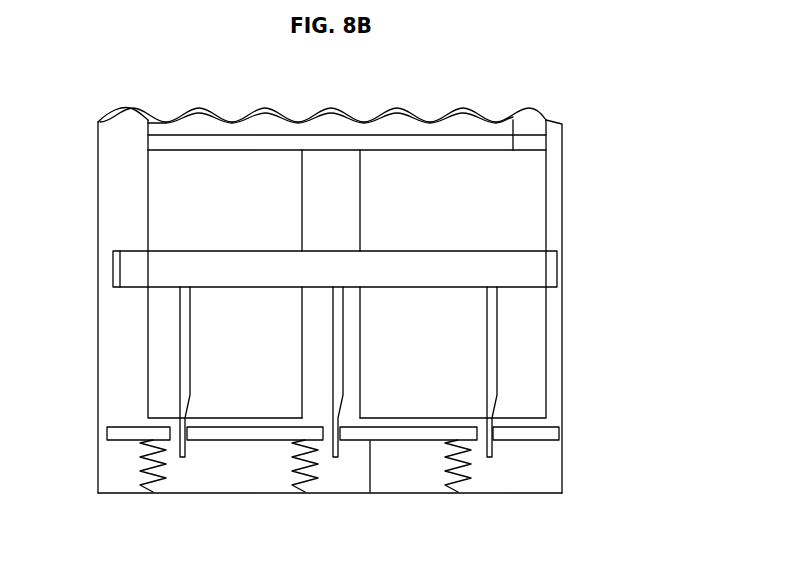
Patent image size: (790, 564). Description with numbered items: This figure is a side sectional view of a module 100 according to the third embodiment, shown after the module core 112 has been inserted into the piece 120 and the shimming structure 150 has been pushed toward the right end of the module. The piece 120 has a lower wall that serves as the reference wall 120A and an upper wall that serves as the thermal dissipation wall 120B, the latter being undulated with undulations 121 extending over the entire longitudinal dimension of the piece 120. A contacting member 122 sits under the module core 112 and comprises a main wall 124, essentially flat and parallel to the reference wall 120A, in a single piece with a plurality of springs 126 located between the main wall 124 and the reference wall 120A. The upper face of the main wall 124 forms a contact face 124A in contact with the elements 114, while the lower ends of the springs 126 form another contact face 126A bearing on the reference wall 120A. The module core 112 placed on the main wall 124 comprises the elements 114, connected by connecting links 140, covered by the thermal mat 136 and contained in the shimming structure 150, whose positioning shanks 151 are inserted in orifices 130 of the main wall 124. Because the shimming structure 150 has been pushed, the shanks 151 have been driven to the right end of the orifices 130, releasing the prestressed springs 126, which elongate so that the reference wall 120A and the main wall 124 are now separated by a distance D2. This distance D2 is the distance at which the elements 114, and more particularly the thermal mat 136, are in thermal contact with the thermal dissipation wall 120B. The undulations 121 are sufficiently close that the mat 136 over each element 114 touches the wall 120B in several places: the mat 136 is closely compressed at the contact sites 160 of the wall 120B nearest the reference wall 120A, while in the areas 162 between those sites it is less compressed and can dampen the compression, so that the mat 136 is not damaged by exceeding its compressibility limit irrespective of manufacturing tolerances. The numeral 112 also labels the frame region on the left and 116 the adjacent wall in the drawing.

The module 100 is at (614, 121).
The module core 112 is at (103, 209).
The elements 114 is at (523, 210).
The housing wall 116 is at (84, 260).
The piece 120 is at (555, 350).
The reference wall 120A is at (487, 494).
The thermal dissipation wall 120B is at (132, 108).
The undulations 121 is at (404, 100).
The contacting member 122 is at (548, 435).
The main wall 124 is at (358, 447).
The contact face 124A is at (237, 418).
The springs 126 is at (140, 476).
The contact face 126A is at (306, 503).
The orifices 130 is at (122, 458).
The thermal mat 136 is at (530, 128).
The connecting links 140 is at (530, 147).
The shimming structure 150 is at (542, 270).
The positioning shanks 151 is at (185, 363).
The contact sites 160 is at (166, 114).
The areas 162 is at (228, 102).
The distance D2 is at (370, 448).